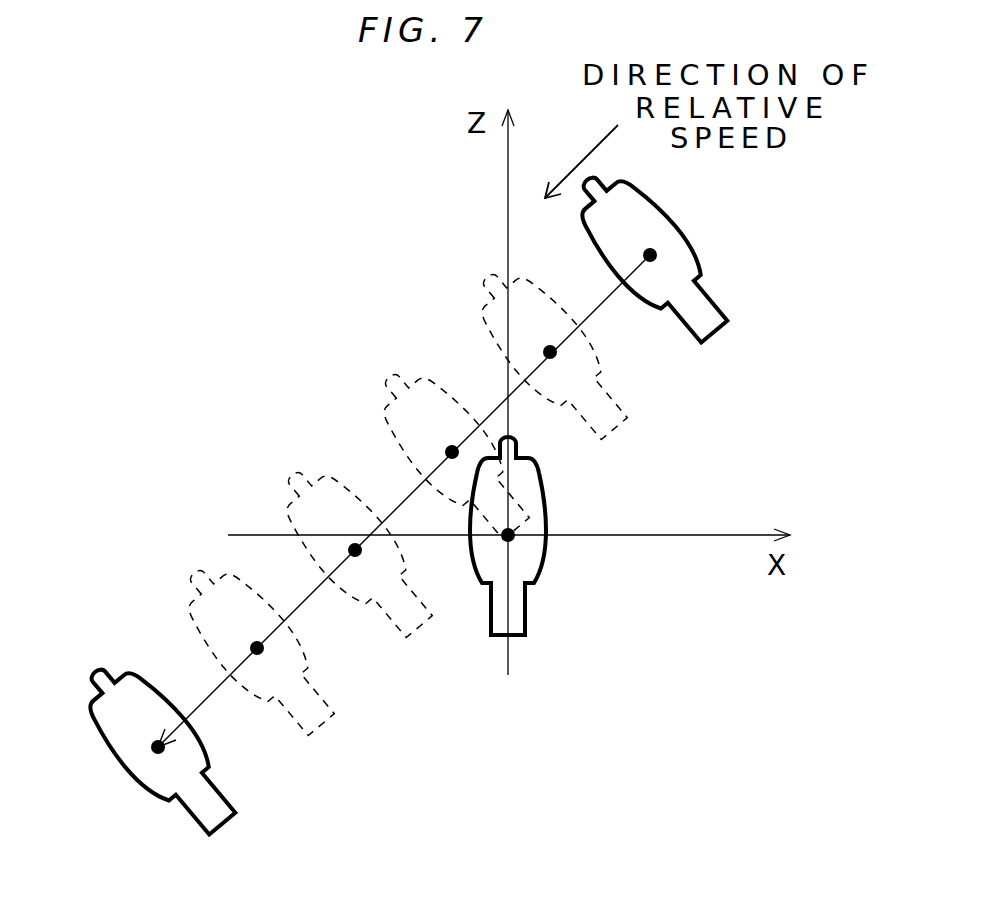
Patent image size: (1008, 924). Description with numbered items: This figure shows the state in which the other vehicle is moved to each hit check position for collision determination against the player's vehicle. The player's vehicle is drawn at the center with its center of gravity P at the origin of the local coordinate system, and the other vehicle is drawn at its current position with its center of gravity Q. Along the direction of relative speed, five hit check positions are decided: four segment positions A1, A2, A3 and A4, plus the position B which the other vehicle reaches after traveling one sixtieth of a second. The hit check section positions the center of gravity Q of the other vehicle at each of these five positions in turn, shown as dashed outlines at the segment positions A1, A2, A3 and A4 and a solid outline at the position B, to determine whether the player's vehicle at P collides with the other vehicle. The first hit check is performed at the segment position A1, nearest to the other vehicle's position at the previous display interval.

The center of gravity of the other vehicle Q is at (652, 252).
The center of gravity of the player's vehicle P is at (508, 536).
The position which the other vehicle reaches after traveling 1/60 seconds B is at (156, 746).
The segment position A1 is at (548, 350).
The segment position A2 is at (450, 452).
The segment position A3 is at (353, 550).
The segment position A4 is at (255, 648).